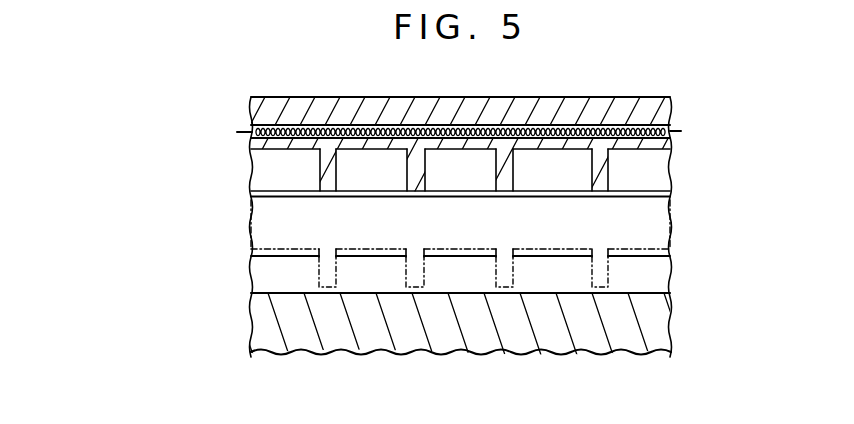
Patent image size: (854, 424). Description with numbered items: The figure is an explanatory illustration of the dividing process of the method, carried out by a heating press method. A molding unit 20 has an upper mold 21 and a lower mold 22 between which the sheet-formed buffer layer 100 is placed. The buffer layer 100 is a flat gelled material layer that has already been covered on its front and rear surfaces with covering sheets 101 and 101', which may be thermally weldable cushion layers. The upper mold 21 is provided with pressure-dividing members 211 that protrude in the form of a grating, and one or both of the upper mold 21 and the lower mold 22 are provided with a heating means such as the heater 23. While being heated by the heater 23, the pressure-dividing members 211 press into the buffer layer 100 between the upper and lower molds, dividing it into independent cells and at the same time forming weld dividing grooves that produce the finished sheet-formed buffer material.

The molding unit 20 is at (223, 97).
The upper mold 21 is at (633, 108).
The lower mold 22 is at (582, 334).
The heater 23 is at (311, 126).
The pressure-dividing members 211 is at (328, 168).
The sheet-formed buffer layer 100 is at (648, 270).
The covering sheet 101 is at (503, 237).
The covering sheet 101' is at (506, 305).